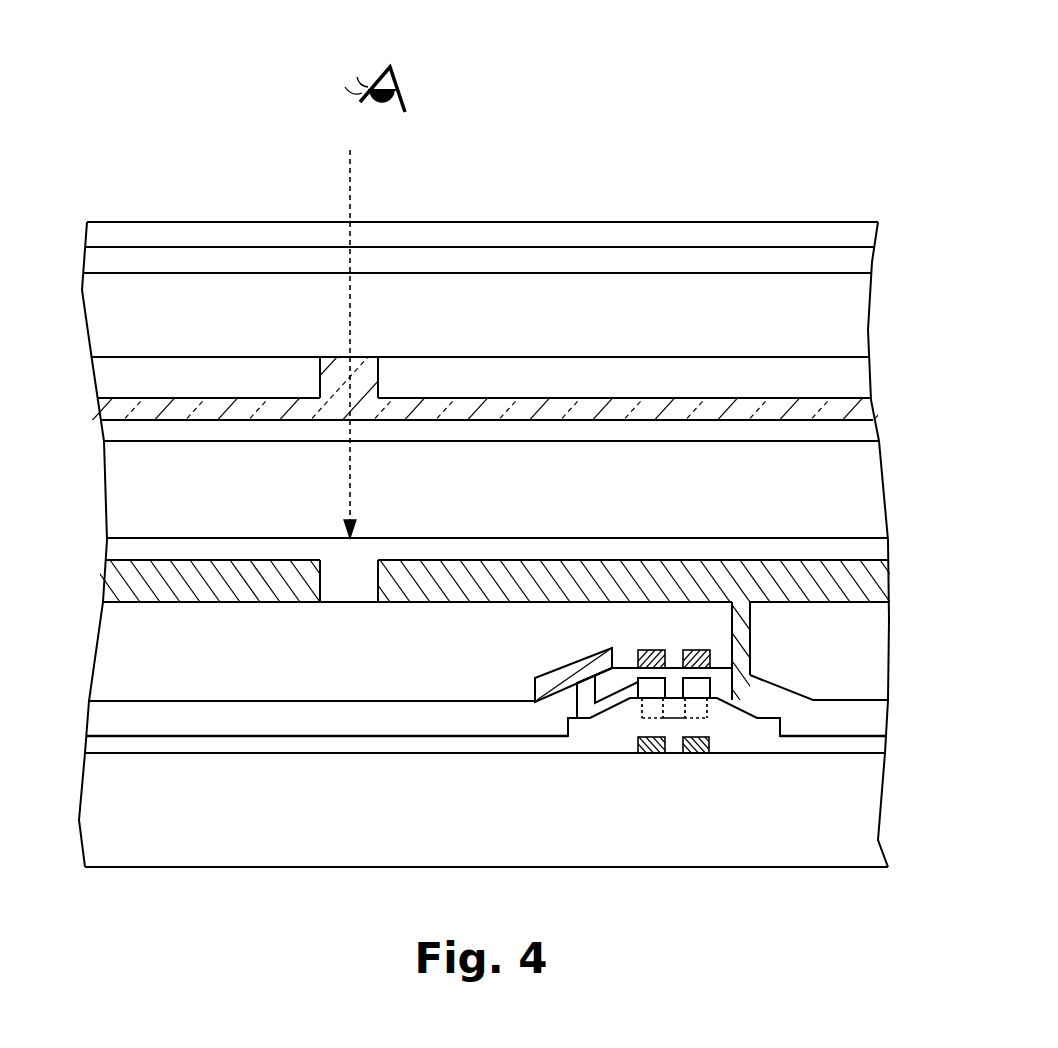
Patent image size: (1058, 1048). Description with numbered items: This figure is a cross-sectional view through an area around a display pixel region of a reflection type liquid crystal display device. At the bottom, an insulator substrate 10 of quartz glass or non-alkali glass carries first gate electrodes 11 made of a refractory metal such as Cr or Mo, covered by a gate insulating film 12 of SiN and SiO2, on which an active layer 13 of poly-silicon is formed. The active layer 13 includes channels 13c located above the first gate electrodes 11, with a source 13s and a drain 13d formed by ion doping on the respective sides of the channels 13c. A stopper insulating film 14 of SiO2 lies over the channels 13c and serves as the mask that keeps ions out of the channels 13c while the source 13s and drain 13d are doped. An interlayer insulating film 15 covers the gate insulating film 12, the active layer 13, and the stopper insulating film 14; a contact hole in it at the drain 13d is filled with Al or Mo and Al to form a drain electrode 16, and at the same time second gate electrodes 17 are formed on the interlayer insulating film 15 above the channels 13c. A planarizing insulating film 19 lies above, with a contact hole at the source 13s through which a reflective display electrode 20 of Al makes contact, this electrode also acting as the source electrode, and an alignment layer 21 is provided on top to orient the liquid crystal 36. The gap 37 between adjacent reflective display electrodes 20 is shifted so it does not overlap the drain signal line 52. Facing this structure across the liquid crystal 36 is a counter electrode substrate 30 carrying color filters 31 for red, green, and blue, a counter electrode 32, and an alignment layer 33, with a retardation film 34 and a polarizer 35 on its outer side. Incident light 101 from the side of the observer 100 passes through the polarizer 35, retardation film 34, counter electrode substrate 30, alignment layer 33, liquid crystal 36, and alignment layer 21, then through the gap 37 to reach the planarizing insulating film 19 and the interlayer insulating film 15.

The observer 100 is at (400, 80).
The incident light 101 is at (348, 188).
The polarizer 35 is at (867, 233).
The retardation film 34 is at (863, 260).
The counter electrode substrate 30 is at (858, 320).
The color filters 31 is at (857, 372).
The counter electrode 32 is at (860, 400).
The alignment layer 33 is at (862, 428).
The liquid crystal 36 is at (868, 488).
The gap 37 is at (357, 572).
The alignment layer 21 is at (875, 548).
The reflective display electrode 20 is at (870, 582).
The planarizing insulating film 19 is at (870, 648).
The interlayer insulating film 15 is at (868, 717).
The drain electrode 16 is at (528, 667).
The drain signal line 52 is at (552, 676).
The stopper insulating film 14 is at (642, 690).
The second gate electrodes 17 is at (648, 650).
The active layer 13 is at (783, 725).
The drain 13d is at (583, 728).
The channels 13c is at (640, 708).
The source 13s is at (757, 722).
The first gate electrodes 11 is at (655, 755).
The gate insulating film 12 is at (872, 742).
The insulator substrate 10 is at (868, 773).